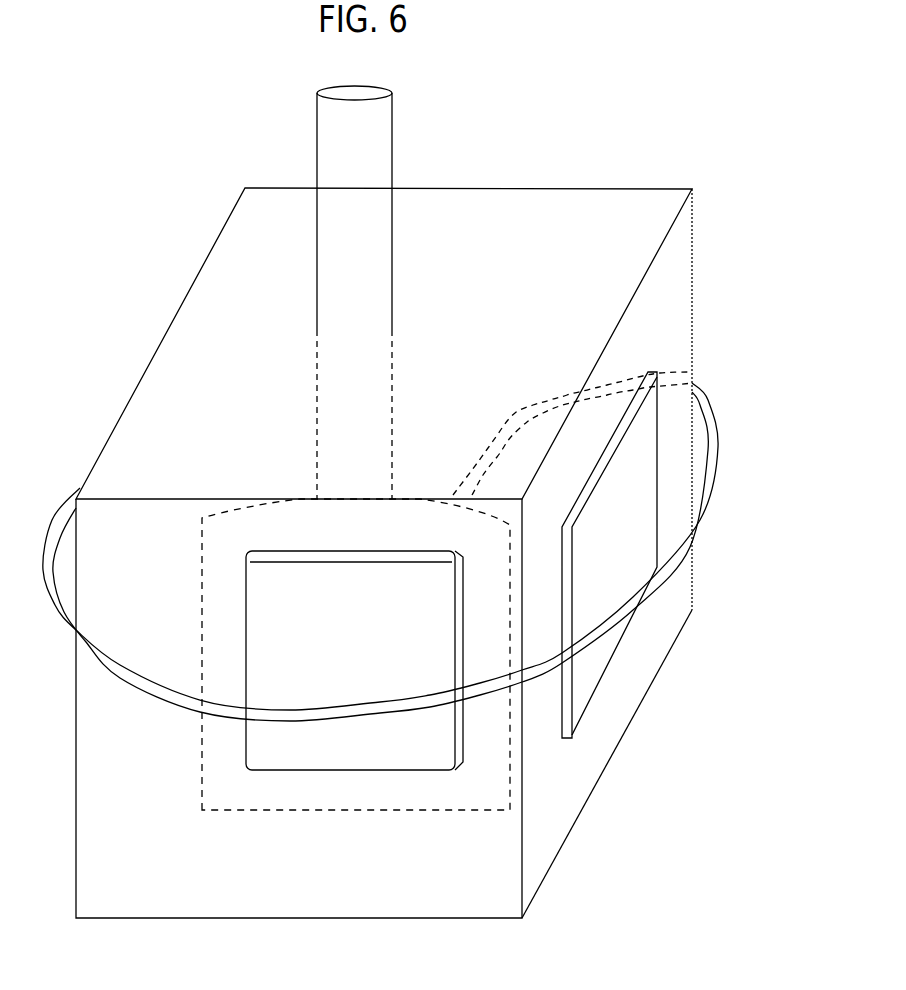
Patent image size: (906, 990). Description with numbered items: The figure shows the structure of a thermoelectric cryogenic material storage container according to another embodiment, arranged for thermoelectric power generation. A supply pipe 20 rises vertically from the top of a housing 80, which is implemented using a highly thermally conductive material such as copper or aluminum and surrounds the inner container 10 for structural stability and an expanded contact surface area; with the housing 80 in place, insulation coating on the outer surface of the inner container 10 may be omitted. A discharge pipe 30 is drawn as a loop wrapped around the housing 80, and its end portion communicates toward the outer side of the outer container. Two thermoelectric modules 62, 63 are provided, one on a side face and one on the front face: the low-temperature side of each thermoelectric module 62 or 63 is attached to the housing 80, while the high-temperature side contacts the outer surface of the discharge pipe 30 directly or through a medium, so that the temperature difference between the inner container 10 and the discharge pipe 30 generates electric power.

The inner container 10 is at (428, 810).
The supply pipe 20 is at (392, 157).
The discharge pipe 30 is at (715, 407).
The thermoelectric module 62 is at (660, 378).
The thermoelectric module 63 is at (310, 810).
The housing 80 is at (663, 189).